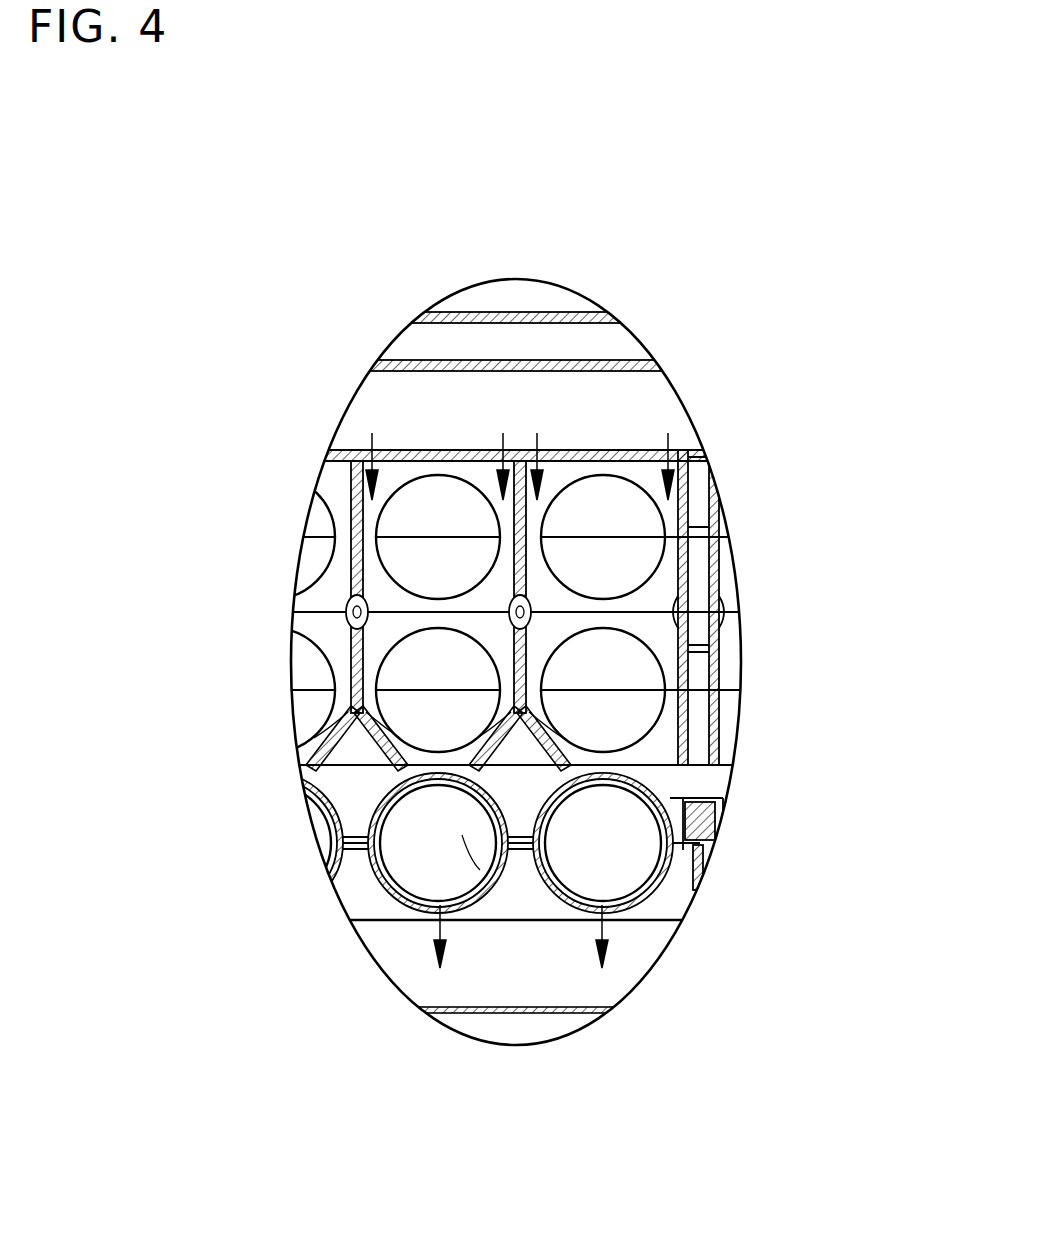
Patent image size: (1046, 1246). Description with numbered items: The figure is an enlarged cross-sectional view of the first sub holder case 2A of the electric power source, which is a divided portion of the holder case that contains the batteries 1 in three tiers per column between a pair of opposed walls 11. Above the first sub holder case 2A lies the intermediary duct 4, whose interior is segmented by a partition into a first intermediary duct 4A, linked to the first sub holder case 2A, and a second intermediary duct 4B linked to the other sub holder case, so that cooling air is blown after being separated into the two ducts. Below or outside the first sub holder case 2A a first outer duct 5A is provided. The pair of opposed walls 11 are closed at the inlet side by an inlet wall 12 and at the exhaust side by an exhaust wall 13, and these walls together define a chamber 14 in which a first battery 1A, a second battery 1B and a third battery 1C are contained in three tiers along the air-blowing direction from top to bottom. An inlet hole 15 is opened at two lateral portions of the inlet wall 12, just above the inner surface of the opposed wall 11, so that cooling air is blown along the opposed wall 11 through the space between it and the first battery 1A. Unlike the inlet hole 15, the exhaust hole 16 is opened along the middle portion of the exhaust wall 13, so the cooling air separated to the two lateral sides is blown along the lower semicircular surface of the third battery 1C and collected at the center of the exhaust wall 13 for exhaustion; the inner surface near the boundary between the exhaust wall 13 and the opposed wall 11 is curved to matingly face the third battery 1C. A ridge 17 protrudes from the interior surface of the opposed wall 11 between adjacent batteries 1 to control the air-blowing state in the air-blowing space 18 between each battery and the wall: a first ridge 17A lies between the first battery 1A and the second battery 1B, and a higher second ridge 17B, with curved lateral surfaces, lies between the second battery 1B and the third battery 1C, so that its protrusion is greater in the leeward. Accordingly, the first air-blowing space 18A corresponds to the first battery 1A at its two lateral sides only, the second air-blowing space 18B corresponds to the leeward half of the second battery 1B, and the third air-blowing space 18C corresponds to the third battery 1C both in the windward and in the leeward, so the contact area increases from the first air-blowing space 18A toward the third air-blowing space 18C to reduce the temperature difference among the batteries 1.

The battery 1 is at (790, 220).
The first battery 1A is at (457, 513).
The second battery 1B is at (467, 652).
The third battery 1C is at (467, 800).
The first sub holder case 2A is at (768, 445).
The intermediary duct 4 is at (297, 253).
The first intermediary duct 4A is at (383, 381).
The second intermediary duct 4B is at (432, 342).
The first outer duct 5A is at (490, 1010).
The opposed wall 11 is at (362, 522).
The inlet wall 12 is at (503, 413).
The exhaust wall 13 is at (400, 921).
The chamber 14 is at (362, 503).
The inlet hole 15 is at (557, 413).
The exhaust hole 16 is at (421, 935).
The ridge 17 is at (742, 990).
The first ridge 17A is at (480, 870).
The second ridge 17B is at (367, 597).
The air-blowing space 18 is at (197, 735).
The first air-blowing space 18A is at (366, 571).
The second air-blowing space 18B is at (378, 742).
The third air-blowing space 18C is at (368, 820).